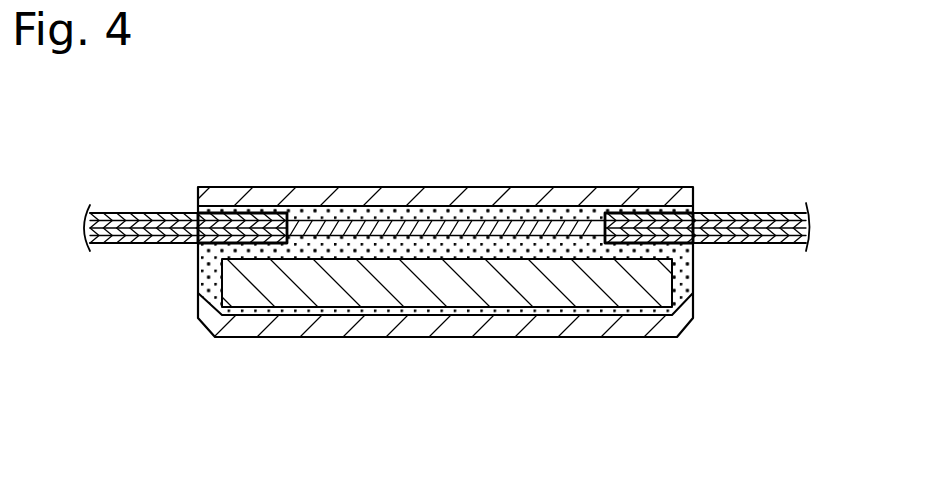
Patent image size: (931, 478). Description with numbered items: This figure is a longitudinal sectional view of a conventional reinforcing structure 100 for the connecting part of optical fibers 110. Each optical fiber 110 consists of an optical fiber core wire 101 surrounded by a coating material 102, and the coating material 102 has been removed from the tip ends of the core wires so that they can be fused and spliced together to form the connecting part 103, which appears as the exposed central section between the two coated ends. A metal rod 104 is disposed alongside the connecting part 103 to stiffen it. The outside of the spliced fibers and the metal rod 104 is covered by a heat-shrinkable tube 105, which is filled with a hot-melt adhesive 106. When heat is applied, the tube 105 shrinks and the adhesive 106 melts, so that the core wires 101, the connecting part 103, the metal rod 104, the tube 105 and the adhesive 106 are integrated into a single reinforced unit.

The reinforcing structure 100 is at (474, 447).
The optical fiber core wire 101 is at (810, 227).
The coating material 102 is at (772, 218).
The connecting part 103 is at (440, 228).
The metal rod 104 is at (335, 298).
The heat-shrinkable tube 105 is at (637, 198).
The hot-melt adhesive 106 is at (682, 275).
The optical fiber 110 is at (741, 156).